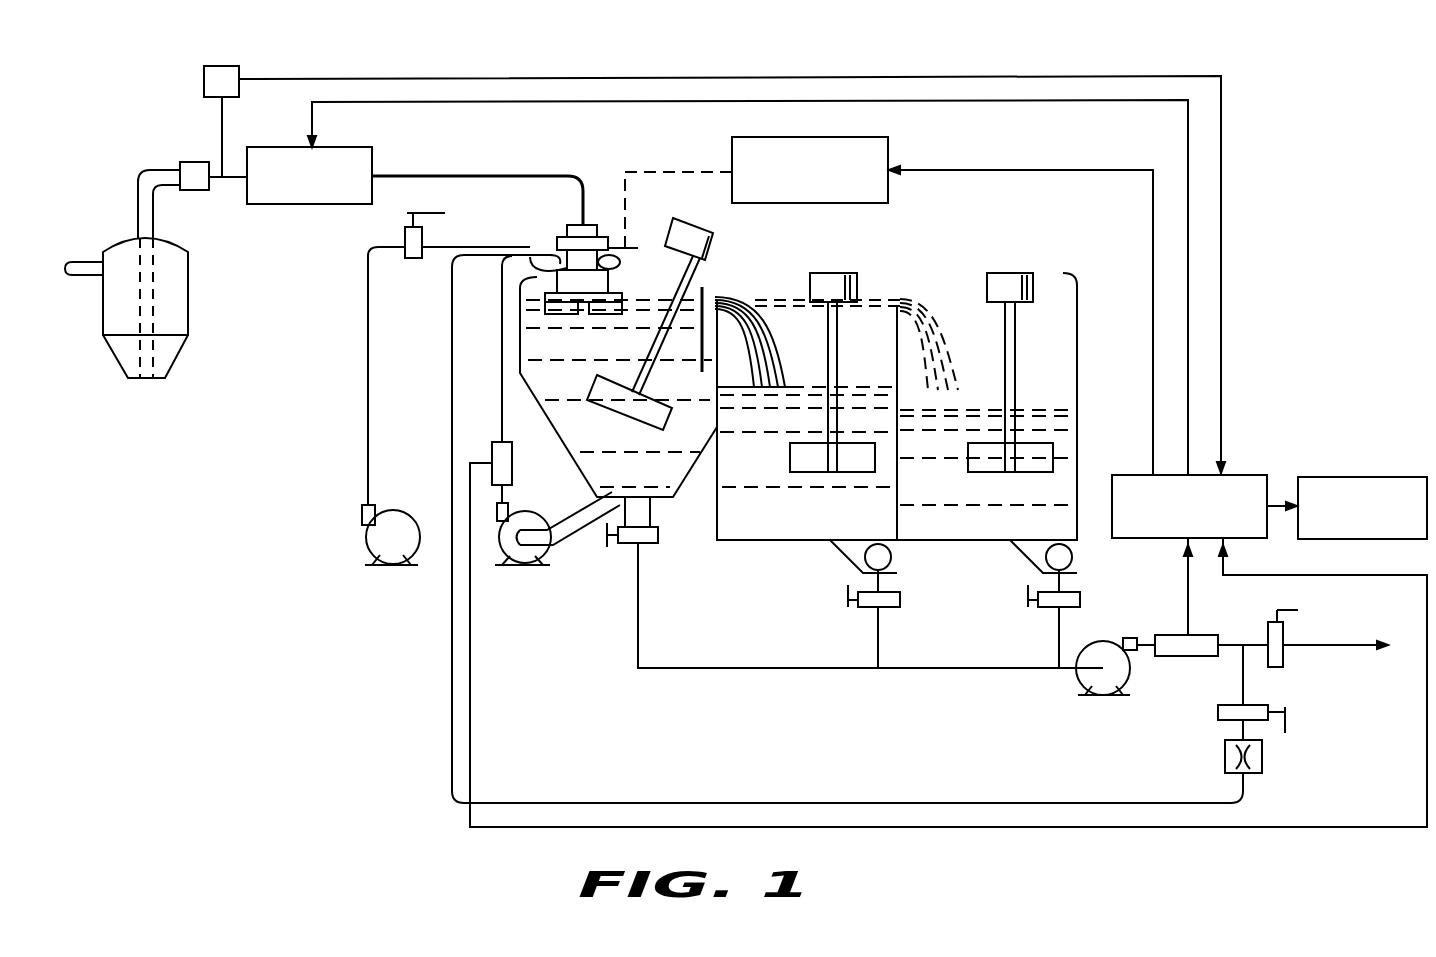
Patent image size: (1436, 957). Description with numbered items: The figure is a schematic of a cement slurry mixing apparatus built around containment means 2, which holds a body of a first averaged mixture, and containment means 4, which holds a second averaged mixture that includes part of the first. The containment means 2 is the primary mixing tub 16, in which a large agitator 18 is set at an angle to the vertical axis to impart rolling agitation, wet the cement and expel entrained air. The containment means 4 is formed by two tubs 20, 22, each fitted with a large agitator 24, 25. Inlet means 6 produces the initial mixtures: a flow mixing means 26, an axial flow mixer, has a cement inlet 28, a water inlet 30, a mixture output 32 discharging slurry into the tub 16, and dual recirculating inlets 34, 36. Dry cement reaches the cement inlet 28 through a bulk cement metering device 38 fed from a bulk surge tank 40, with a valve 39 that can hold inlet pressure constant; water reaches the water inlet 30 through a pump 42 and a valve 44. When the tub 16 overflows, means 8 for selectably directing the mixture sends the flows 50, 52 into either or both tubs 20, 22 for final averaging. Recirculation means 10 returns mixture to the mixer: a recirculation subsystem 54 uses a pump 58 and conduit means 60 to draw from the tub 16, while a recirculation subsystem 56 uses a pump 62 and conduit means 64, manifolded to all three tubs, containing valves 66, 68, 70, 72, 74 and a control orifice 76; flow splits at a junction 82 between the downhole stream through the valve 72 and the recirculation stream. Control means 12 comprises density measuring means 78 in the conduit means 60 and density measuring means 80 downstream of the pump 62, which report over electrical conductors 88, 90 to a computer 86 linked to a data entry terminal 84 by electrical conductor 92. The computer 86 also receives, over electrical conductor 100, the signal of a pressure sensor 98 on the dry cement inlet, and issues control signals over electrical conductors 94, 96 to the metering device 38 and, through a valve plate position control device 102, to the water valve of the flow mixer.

The containment means 2 is at (684, 506).
The containment means 4 is at (792, 568).
The inlet means 6 is at (282, 331).
The means for selectably directing 8 is at (718, 293).
The recirculation means 10 is at (452, 814).
The control means 12 is at (1345, 409).
The primary mixing tub 16 is at (558, 440).
The large agitator 18 is at (697, 214).
The tub 20 is at (760, 542).
The tub 22 is at (966, 542).
The large agitator 24 is at (840, 268).
The large agitator 25 is at (1015, 266).
The flow mixing means 26 is at (612, 220).
The cement inlet 28 is at (584, 222).
The water inlet 30 is at (560, 240).
The mixture output 32 is at (612, 296).
The recirculating inlet 34 is at (556, 258).
The recirculating inlet 36 is at (621, 263).
The bulk cement metering device 38 is at (345, 147).
The valve 39 is at (187, 161).
The bulk surge tank 40 is at (190, 284).
The pump 42 is at (383, 542).
The valve 44 is at (411, 260).
The flow 50 is at (783, 328).
The flow 52 is at (953, 330).
The recirculation subsystem 54 is at (524, 578).
The recirculation subsystem 56 is at (1120, 616).
The pump 58 is at (542, 552).
The conduit means 60 is at (500, 373).
The pump 62 is at (1093, 676).
The conduit means 64 is at (963, 669).
The valve 66 is at (645, 544).
The valve 68 is at (888, 608).
The valve 70 is at (1053, 608).
The valve 72 is at (1284, 662).
The valve 74 is at (1228, 722).
The control orifice 76 is at (1263, 758).
The density measuring means 78 is at (511, 452).
The density measuring means 80 is at (1170, 657).
The junction 82 is at (1243, 644).
The data entry terminal 84 is at (1405, 477).
The computer 86 is at (1246, 475).
The electrical conductor 88 is at (960, 828).
The electrical conductor 90 is at (1190, 601).
The electrical conductor 92 is at (1288, 505).
The electrical conductor 94 is at (1153, 412).
The electrical conductor 96 is at (1187, 386).
The pressure sensor 98 is at (240, 74).
The electrical conductor 100 is at (1223, 337).
The valve plate position control device 102 is at (890, 156).